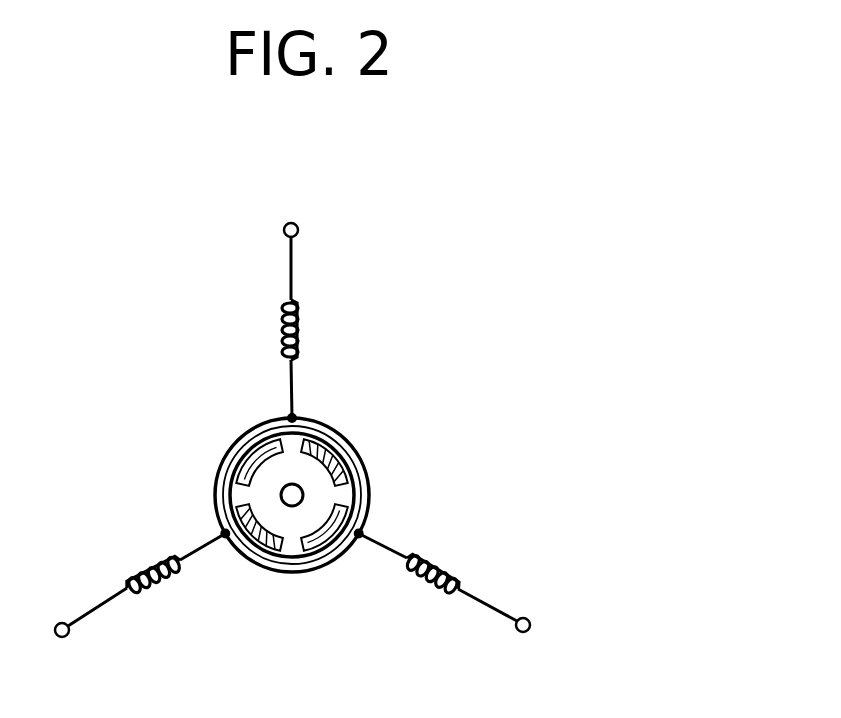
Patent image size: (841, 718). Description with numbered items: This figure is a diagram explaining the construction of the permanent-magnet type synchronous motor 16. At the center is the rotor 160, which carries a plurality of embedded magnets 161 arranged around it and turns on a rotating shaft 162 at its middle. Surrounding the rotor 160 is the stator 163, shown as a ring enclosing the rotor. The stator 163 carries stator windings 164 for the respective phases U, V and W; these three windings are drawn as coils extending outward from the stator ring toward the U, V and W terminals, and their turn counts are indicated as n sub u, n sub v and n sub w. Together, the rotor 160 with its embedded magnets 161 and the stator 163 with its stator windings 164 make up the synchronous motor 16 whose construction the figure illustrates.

The synchronous motor 16 is at (138, 365).
The rotor 160 is at (363, 478).
The embedded magnets 161 is at (344, 445).
The rotating shaft 162 is at (290, 497).
The stator 163 is at (304, 552).
The stator windings 164 is at (441, 565).